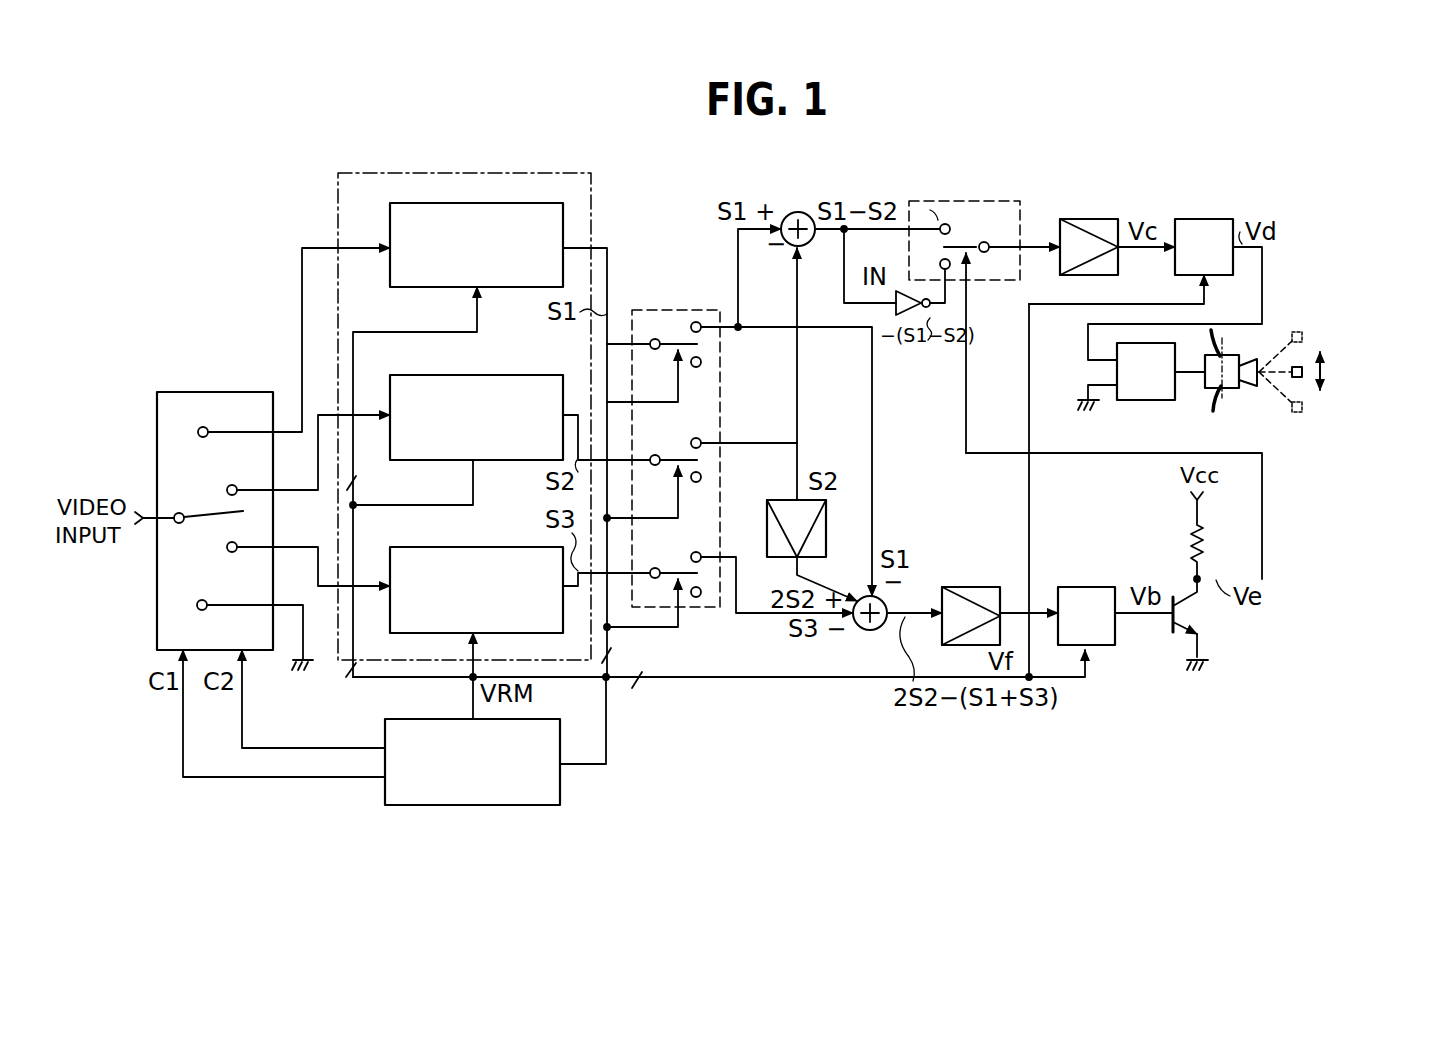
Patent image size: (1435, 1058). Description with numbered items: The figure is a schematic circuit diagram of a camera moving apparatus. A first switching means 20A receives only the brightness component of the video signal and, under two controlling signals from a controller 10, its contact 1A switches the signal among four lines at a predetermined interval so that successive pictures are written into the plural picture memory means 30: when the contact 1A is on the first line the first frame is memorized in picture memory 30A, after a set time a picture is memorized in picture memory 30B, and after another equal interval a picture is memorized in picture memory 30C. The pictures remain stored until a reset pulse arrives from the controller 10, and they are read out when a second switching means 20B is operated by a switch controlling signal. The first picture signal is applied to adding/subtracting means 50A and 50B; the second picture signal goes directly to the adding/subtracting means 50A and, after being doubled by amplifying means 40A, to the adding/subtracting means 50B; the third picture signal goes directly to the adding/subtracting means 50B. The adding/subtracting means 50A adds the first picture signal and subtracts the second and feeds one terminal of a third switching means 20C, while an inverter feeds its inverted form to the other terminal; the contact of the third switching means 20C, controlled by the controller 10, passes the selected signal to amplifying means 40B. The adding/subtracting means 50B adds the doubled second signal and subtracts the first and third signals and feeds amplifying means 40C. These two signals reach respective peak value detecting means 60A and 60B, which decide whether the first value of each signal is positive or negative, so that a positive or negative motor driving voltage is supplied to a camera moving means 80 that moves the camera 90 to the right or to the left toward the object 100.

The controller 10 is at (428, 806).
The contact 1A is at (223, 514).
The first switching means 20A is at (197, 392).
The second switching means 20B is at (657, 312).
The third switching means 20C is at (996, 204).
The picture memory means 30 is at (427, 183).
The picture memory 30A is at (445, 288).
The picture memory 30B is at (387, 374).
The picture memory 30C is at (387, 546).
The amplifying means 40A is at (763, 512).
The amplifying means 40B is at (1058, 220).
The amplifying means 40C is at (948, 592).
The adding/subtracting means 50A is at (796, 214).
The adding/subtracting means 50B is at (865, 631).
The peak value detecting means 60A is at (1056, 592).
The peak value detecting means 60B is at (1173, 220).
The camera moving means 80 is at (1122, 401).
The camera 90 is at (1203, 389).
The object 100 is at (1298, 365).